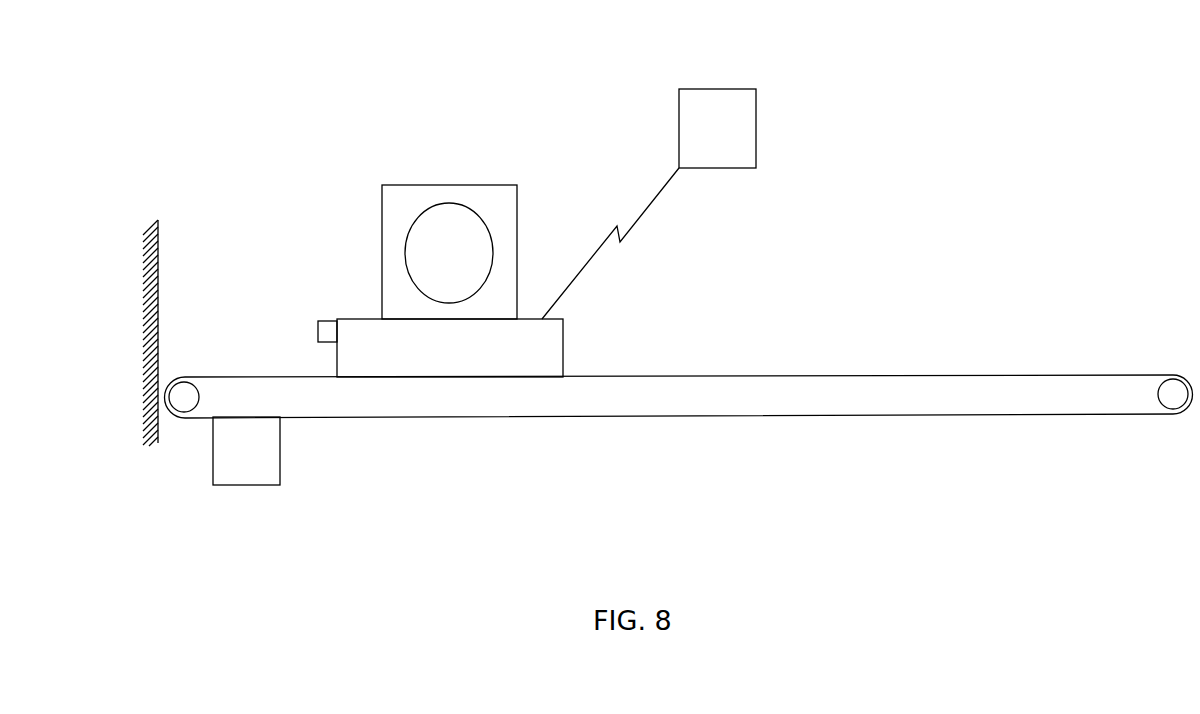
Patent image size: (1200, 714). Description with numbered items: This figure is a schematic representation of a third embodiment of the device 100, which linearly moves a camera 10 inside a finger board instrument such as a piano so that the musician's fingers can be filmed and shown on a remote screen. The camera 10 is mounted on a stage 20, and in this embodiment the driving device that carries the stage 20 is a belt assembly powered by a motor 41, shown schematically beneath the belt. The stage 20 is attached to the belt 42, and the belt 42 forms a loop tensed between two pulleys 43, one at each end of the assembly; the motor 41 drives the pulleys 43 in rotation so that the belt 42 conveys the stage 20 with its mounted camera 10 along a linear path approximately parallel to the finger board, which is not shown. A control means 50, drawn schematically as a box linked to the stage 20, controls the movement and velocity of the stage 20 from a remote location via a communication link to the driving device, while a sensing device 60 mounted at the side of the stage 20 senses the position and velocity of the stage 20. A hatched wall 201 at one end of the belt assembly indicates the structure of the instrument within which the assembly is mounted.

The device 100 is at (247, 102).
The camera 10 is at (455, 185).
The stage 20 is at (373, 319).
The control means 50 is at (713, 89).
The sensing device 60 is at (318, 322).
The wall 201 is at (150, 232).
The motor 41 is at (272, 447).
The belt 42 is at (1104, 375).
The pulleys 43 is at (187, 390).